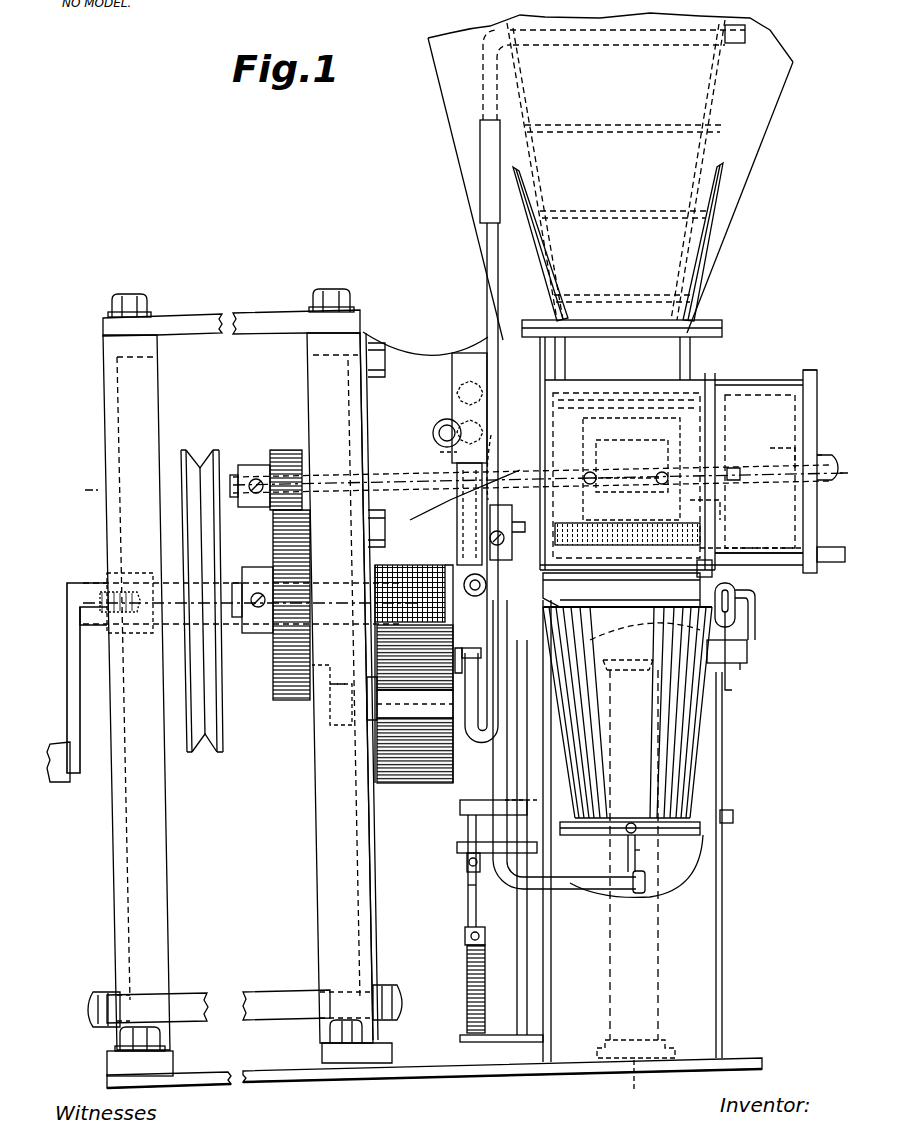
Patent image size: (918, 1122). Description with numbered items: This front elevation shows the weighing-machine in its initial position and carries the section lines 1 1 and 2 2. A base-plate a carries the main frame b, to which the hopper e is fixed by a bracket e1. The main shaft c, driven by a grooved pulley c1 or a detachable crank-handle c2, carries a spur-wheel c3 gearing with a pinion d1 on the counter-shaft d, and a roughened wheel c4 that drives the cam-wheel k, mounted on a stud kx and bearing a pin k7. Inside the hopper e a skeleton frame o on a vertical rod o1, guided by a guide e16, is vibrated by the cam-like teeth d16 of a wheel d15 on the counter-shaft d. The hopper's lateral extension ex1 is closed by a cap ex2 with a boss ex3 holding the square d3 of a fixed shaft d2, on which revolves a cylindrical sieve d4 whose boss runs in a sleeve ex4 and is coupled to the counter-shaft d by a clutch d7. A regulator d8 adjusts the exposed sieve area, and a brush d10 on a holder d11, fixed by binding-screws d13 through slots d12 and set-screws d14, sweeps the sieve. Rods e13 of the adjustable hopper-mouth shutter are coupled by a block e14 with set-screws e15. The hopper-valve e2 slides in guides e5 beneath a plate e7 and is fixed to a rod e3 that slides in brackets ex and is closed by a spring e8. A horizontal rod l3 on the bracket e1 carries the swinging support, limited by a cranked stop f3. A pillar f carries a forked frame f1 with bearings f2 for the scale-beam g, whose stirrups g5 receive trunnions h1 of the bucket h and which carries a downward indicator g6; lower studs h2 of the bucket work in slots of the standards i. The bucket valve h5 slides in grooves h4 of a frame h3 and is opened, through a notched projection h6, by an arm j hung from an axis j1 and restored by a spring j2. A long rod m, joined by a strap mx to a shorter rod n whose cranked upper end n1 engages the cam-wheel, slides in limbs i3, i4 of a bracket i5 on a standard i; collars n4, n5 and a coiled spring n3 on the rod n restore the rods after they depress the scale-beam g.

The base-plate a is at (222, 1078).
The main frame b is at (130, 878).
The main or driven shaft c is at (262, 633).
The grooved pulley c1 is at (192, 462).
The detachable crank-handle c2 is at (75, 695).
The spur-wheel c3 is at (292, 700).
The roughened wheel c4 is at (385, 572).
The counter-shaft d is at (245, 478).
The pinion d1 is at (284, 452).
The fixed shaft d2 is at (804, 460).
The square d3 is at (820, 470).
The cylindrical sieve d4 is at (656, 378).
The clutch d7 is at (459, 502).
The imperforate cylinder or regulator d8 is at (777, 447).
The brush d10 is at (700, 535).
The holder d11 is at (672, 450).
The slots d12 is at (626, 470).
The binding-screws d13 is at (600, 490).
The set-screws d14 is at (630, 438).
The wheel d15 is at (590, 436).
The cam-like teeth d16 is at (469, 458).
The hopper e is at (462, 112).
The bracket e1 is at (410, 358).
The sliding shutter or valve e2 is at (555, 588).
The sliding rod e3 is at (455, 648).
The guides e5 is at (715, 572).
The plate e7 is at (630, 586).
The spring e8 is at (440, 455).
The rods e13 is at (831, 533).
The block or strap e14 is at (835, 553).
The set-screws e15 is at (815, 553).
The guide e16 is at (480, 222).
The brackets ex is at (462, 568).
The lateral extension ex1 is at (740, 388).
The end plate or cap ex2 is at (821, 357).
The boss ex3 is at (820, 462).
The sleeve or bearing ex4 is at (504, 460).
The pillar f is at (662, 938).
The forked frame f1 is at (748, 655).
The bearings f2 is at (748, 592).
The stop f3 is at (470, 820).
The scale-beam g is at (735, 612).
The loops or stirrups g5 is at (732, 690).
The downward projection or indicator g6 is at (560, 635).
The bucket h is at (688, 780).
The trunnions, studs, or projections h1 is at (742, 672).
The studs or projections h2 is at (733, 818).
The rectangular frame h3 is at (567, 822).
The guide-grooves h4 is at (705, 838).
The shutter or valve h5 is at (622, 840).
The notched projection h6 is at (640, 855).
The supplemental frame or standards i is at (722, 890).
The limb i3 is at (470, 862).
The limb i4 is at (460, 1040).
The bracket i5 is at (540, 997).
The arm or lever j is at (569, 755).
The axis of motion j1 is at (517, 520).
The spring j2 is at (578, 690).
The cam-wheel or cylinder k is at (395, 785).
The pin or stud k7 is at (460, 668).
The stud kx is at (330, 725).
The horizontal rod l3 is at (433, 435).
The vertical rod m is at (527, 955).
The strap mx is at (457, 848).
The vertical rod n is at (468, 910).
The upper end n1 is at (468, 785).
The spring n3 is at (467, 990).
The collar n4 is at (468, 880).
The collar n5 is at (465, 940).
The skeleton frame o is at (585, 212).
The vertical rod o1 is at (488, 286).
The section line 1 is at (456, 482).
The section line 2 is at (631, 556).